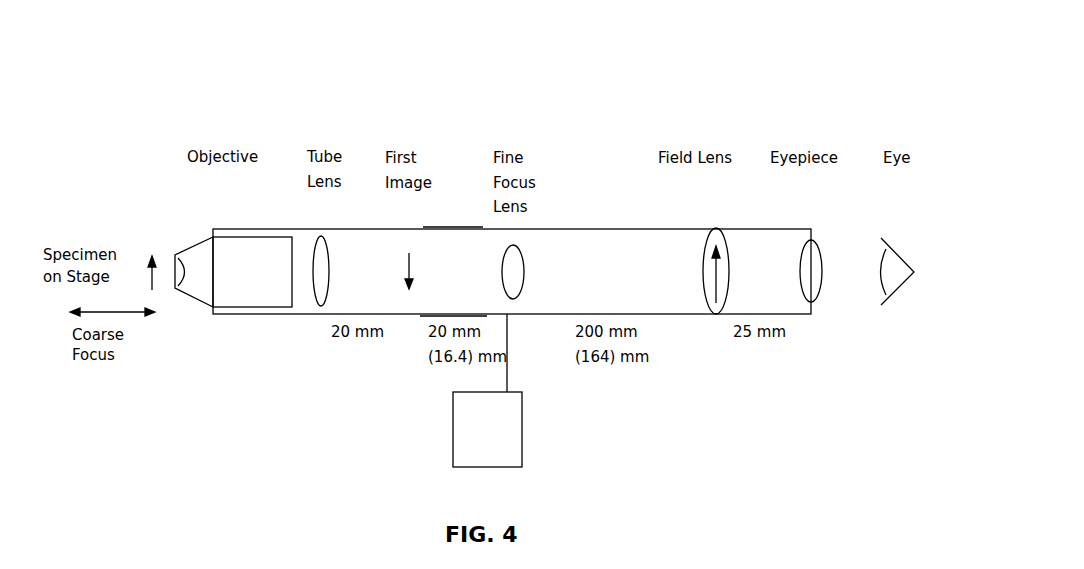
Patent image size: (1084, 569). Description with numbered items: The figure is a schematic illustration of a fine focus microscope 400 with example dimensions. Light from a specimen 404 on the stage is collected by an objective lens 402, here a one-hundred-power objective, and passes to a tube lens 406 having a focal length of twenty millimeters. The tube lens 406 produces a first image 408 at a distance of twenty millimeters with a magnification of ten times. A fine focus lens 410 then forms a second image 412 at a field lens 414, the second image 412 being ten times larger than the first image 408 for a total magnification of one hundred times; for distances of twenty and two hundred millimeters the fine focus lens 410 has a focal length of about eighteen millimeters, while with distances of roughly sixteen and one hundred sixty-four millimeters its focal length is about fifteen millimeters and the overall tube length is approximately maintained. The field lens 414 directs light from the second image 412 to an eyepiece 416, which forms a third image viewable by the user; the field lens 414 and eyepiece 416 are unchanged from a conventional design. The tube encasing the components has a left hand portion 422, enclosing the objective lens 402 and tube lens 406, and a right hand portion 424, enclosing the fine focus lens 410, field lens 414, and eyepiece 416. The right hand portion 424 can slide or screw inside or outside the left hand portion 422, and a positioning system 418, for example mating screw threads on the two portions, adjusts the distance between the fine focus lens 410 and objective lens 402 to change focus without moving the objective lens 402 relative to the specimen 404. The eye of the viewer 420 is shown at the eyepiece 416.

The fine focus microscope 400 is at (660, 100).
The objective lens 402 is at (230, 307).
The specimen 404 is at (150, 281).
The tube lens 406 is at (330, 258).
The first image 408 is at (409, 289).
The fine focus lens 410 is at (516, 298).
The second image 412 is at (717, 275).
The field lens 414 is at (723, 313).
The eyepiece 416 is at (813, 300).
The positioning system 418 is at (522, 443).
The eye 420 is at (887, 298).
The left hand portion 422 is at (275, 307).
The right hand portion 424 is at (665, 314).